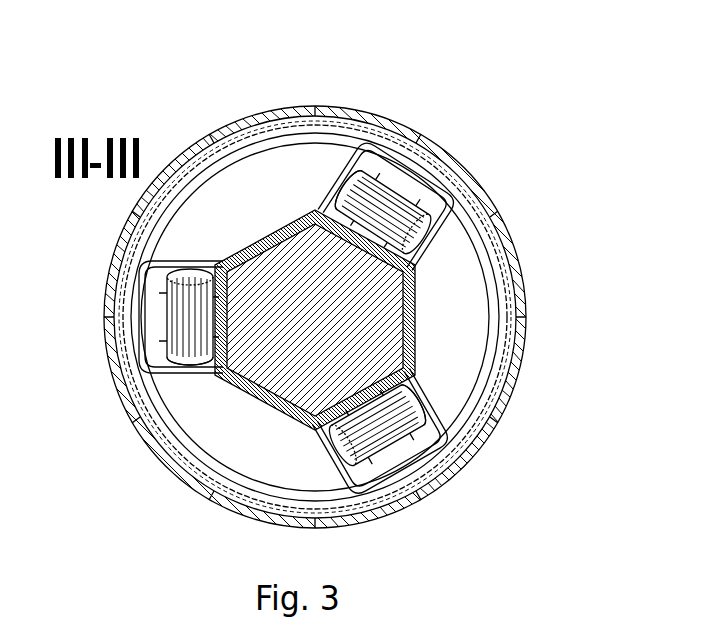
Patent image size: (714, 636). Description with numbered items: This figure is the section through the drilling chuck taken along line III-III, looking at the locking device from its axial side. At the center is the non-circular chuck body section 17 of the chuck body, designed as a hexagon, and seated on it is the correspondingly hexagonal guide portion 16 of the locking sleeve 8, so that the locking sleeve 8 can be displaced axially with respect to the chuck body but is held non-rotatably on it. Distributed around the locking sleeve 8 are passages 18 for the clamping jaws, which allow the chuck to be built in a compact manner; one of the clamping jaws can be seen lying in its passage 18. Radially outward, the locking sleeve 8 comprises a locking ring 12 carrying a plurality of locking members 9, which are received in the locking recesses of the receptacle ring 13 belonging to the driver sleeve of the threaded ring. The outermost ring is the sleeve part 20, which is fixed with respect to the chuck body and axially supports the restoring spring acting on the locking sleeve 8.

The locking sleeve 8 is at (220, 413).
The locking member 9 is at (332, 309).
The locking ring 12 is at (397, 152).
The receptacle ring 13 is at (452, 197).
The guide portion 16 is at (303, 217).
The chuck body section 17 is at (285, 255).
The passage 18 is at (393, 450).
The sleeve part 20 is at (512, 305).